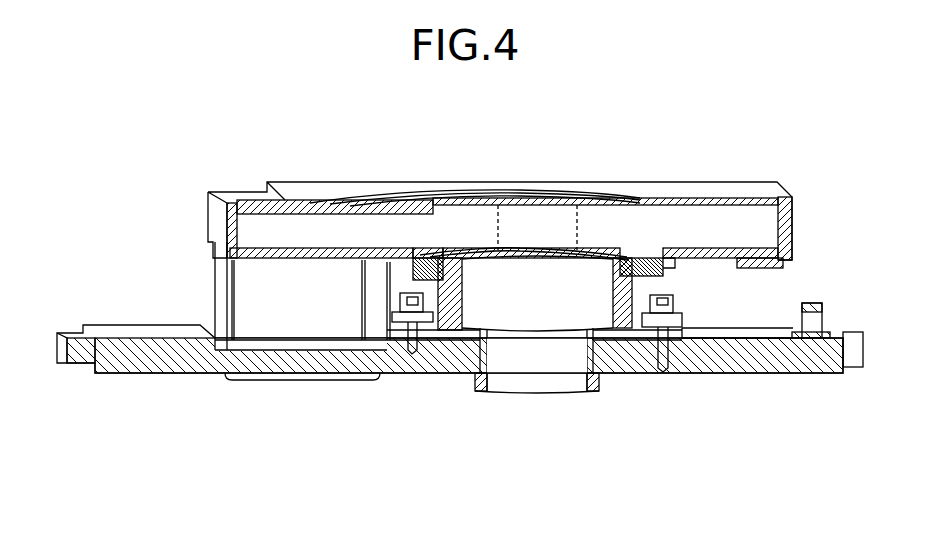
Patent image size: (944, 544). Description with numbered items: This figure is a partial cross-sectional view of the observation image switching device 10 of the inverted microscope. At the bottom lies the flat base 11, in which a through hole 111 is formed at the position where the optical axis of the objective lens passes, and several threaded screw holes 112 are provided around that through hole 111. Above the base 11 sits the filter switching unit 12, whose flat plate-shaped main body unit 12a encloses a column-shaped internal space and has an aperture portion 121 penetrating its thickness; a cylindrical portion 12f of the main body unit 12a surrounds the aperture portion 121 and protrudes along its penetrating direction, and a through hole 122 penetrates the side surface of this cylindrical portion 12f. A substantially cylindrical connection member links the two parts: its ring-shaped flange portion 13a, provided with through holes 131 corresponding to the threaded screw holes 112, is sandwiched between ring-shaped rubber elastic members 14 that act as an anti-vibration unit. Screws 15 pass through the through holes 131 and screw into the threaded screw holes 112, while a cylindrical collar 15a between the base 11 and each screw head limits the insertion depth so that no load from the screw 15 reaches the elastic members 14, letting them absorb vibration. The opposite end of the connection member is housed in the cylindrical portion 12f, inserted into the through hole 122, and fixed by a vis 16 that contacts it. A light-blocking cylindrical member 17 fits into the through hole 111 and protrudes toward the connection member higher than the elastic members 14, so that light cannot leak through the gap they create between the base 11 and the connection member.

The observation image switching device 10 is at (618, 166).
The base 11 is at (184, 374).
The filter switching unit 12 is at (797, 176).
The main body unit 12a is at (742, 197).
The cylindrical portion 12f is at (427, 256).
The flange portion 13a is at (447, 345).
The elastic members 14 is at (390, 338).
The screws 15 is at (405, 372).
The collar 15a is at (398, 300).
The vis 16 is at (688, 256).
The cylindrical member 17 is at (481, 372).
The through hole 111 is at (493, 357).
The threaded screw holes 112 is at (415, 374).
The aperture portion 121 is at (506, 220).
The through hole 122 is at (632, 260).
The through holes 131 is at (437, 268).